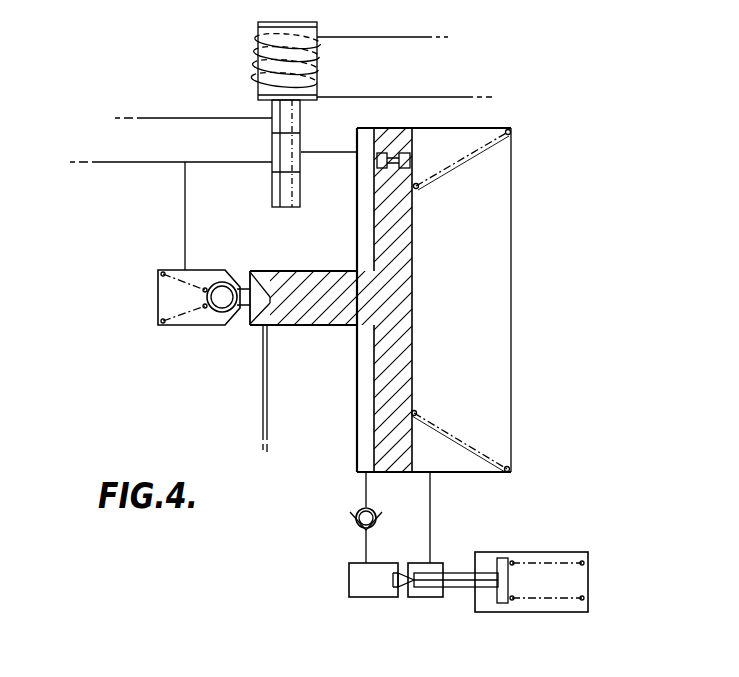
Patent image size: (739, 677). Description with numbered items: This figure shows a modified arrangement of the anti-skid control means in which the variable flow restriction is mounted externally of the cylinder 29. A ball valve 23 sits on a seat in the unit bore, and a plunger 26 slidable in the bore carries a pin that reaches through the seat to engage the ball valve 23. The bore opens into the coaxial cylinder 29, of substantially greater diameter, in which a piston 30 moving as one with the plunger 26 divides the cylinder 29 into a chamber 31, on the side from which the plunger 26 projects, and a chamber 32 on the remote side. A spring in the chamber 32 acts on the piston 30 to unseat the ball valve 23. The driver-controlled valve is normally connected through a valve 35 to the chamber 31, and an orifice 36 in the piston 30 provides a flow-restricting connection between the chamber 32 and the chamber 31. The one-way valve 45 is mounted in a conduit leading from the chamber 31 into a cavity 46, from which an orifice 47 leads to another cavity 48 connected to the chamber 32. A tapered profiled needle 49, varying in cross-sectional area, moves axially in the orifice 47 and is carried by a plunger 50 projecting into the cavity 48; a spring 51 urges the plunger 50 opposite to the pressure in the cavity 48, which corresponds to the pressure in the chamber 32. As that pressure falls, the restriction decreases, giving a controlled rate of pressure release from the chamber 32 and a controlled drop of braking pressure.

The ball valve 23 is at (216, 302).
The plunger 26 is at (322, 300).
The cylinder 29 is at (486, 128).
The piston 30 is at (392, 207).
The chamber 31 is at (366, 243).
The chamber 32 is at (483, 267).
The valve 35 is at (292, 120).
The orifice 36 is at (389, 157).
The one-way valve 45 is at (352, 525).
The cavity 46 is at (366, 598).
The orifice 47 is at (403, 572).
The cavity 48 is at (437, 563).
The profiled needle 49 is at (352, 580).
The plunger 50 is at (462, 580).
The spring 51 is at (551, 562).